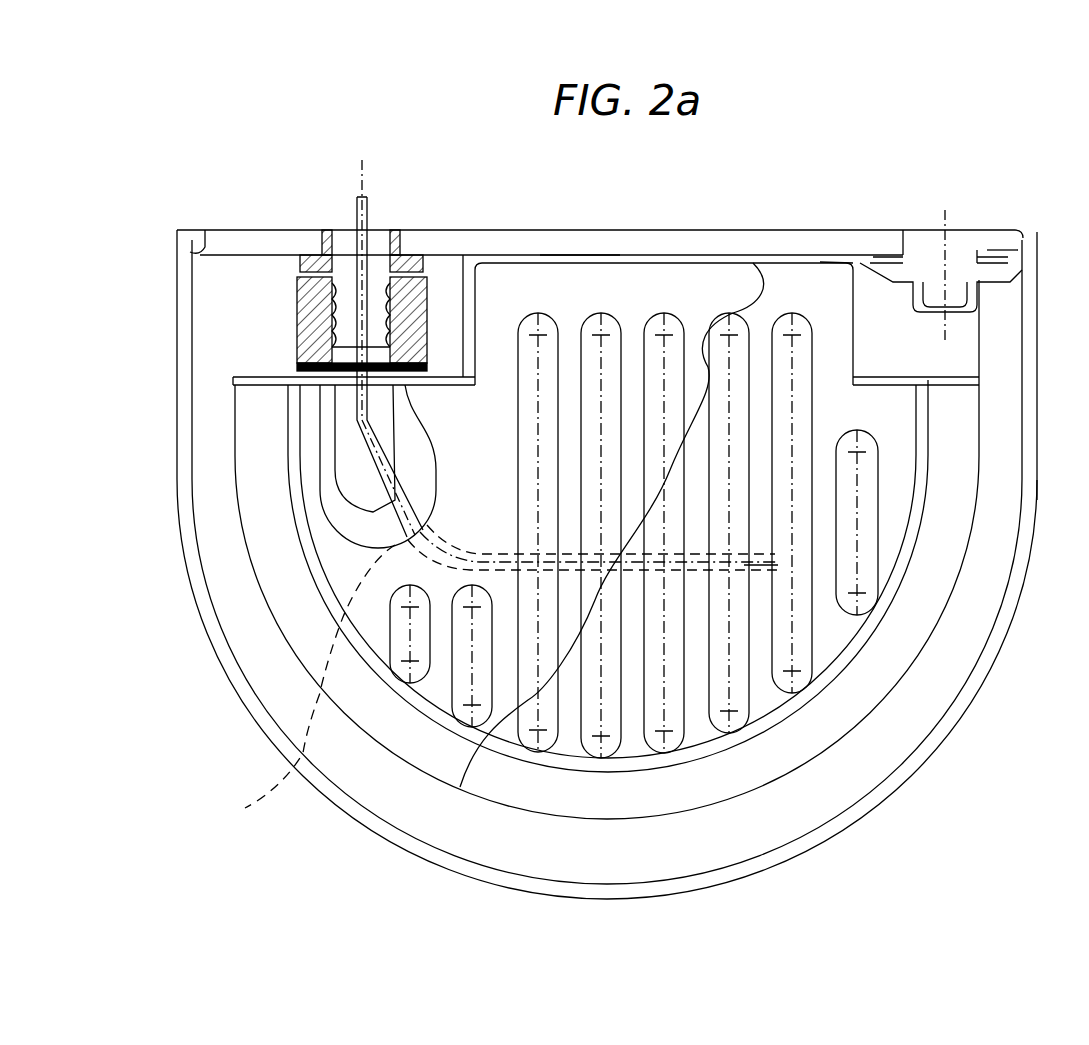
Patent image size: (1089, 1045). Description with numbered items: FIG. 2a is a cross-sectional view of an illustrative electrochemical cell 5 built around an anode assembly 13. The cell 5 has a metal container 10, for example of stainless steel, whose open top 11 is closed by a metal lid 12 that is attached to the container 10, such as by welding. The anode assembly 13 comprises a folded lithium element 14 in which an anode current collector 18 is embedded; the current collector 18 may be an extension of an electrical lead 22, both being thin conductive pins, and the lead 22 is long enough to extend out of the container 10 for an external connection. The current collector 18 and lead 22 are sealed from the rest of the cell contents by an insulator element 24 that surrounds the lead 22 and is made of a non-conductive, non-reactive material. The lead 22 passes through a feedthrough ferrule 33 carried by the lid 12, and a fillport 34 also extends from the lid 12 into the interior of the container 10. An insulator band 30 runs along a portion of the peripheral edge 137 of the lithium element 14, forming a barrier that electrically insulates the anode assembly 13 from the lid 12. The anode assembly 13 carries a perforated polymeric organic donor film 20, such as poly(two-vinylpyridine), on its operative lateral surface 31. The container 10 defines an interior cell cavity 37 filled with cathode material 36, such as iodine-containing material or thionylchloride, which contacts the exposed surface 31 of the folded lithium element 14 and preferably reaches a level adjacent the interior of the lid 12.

The electrochemical cell 5 is at (820, 125).
The container 10 is at (1037, 498).
The open top 11 is at (200, 235).
The lid 12 is at (790, 225).
The anode assembly 13 is at (570, 255).
The folded lithium element 14 is at (835, 630).
The anode current collector 18 is at (500, 667).
The polymeric organic donor film 20 is at (616, 303).
The electrical lead 22 is at (365, 218).
The insulator element 24 is at (423, 313).
The insulator band 30 is at (690, 262).
The operative lateral surface 31 is at (873, 417).
The feedthrough ferrule 33 is at (320, 300).
The fillport 34 is at (987, 247).
The cathode material 36 is at (848, 775).
The interior cell cavity 37 is at (775, 812).
The peripheral edge 137 is at (820, 262).